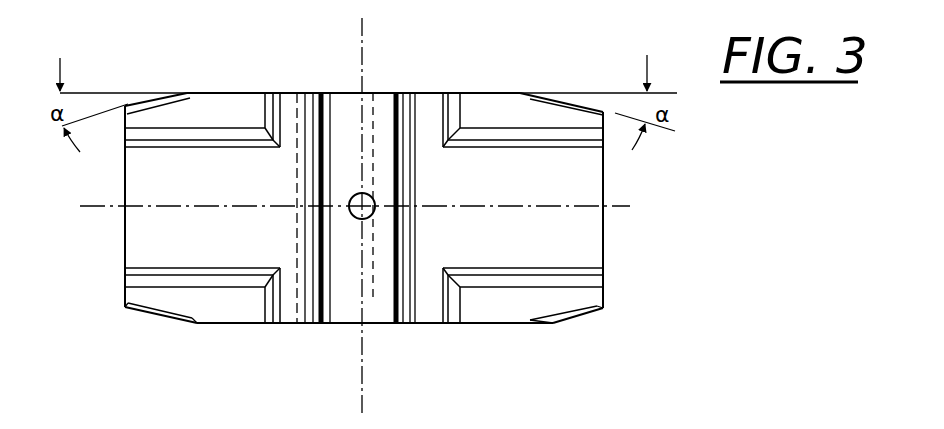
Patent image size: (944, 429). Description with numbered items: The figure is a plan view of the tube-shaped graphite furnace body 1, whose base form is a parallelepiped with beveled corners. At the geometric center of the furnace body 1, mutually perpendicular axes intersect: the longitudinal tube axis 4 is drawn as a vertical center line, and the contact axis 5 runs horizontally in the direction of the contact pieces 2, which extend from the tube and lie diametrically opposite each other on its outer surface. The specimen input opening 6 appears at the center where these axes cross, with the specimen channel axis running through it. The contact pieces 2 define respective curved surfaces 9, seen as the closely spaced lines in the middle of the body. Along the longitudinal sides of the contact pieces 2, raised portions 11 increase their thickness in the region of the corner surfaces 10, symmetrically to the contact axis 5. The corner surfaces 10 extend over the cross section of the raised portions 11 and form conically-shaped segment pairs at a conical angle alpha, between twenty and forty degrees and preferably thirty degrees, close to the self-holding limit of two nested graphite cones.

The furnace body 1 is at (165, 334).
The contact pieces 2 is at (588, 243).
The longitudinal tube axis 4 is at (364, 30).
The contact axis 5 is at (624, 206).
The specimen input opening 6 is at (368, 219).
The curved surfaces 9 is at (307, 323).
The corner surfaces 10 is at (162, 100).
The raised portions 11 is at (232, 102).